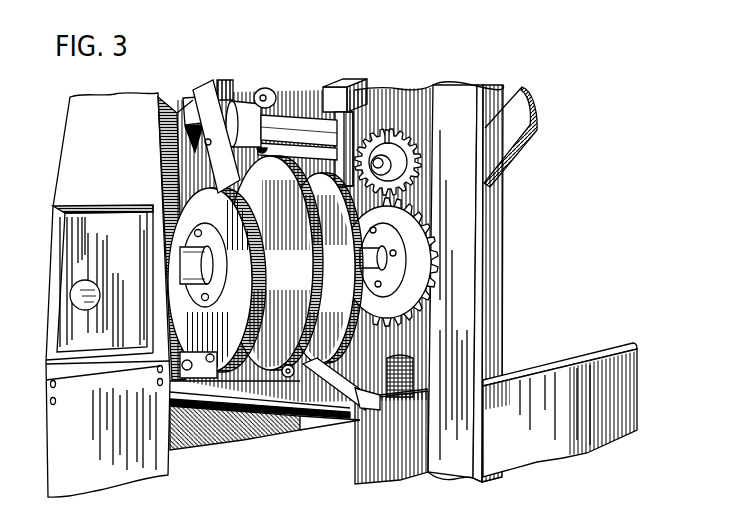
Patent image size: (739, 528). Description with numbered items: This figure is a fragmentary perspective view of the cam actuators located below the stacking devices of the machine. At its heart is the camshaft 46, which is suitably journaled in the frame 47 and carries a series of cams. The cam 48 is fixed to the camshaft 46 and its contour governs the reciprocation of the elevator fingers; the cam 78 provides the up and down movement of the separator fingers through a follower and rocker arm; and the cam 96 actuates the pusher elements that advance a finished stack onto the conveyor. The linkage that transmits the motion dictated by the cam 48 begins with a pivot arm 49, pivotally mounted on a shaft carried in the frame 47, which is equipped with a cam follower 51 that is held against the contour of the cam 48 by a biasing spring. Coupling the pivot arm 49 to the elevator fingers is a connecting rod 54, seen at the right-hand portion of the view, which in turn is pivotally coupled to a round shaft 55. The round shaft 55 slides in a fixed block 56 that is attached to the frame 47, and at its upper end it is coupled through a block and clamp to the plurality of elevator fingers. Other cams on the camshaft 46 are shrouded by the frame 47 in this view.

The camshaft 46 is at (180, 250).
The frame 47 is at (121, 161).
The cam 48 is at (342, 310).
The pivot arm 49 is at (328, 388).
The cam follower 51 is at (372, 270).
The connecting rod 54 is at (345, 193).
The round shaft 55 is at (343, 117).
The fixed block 56 is at (351, 92).
The cam 78 is at (300, 277).
The cam 96 is at (253, 279).